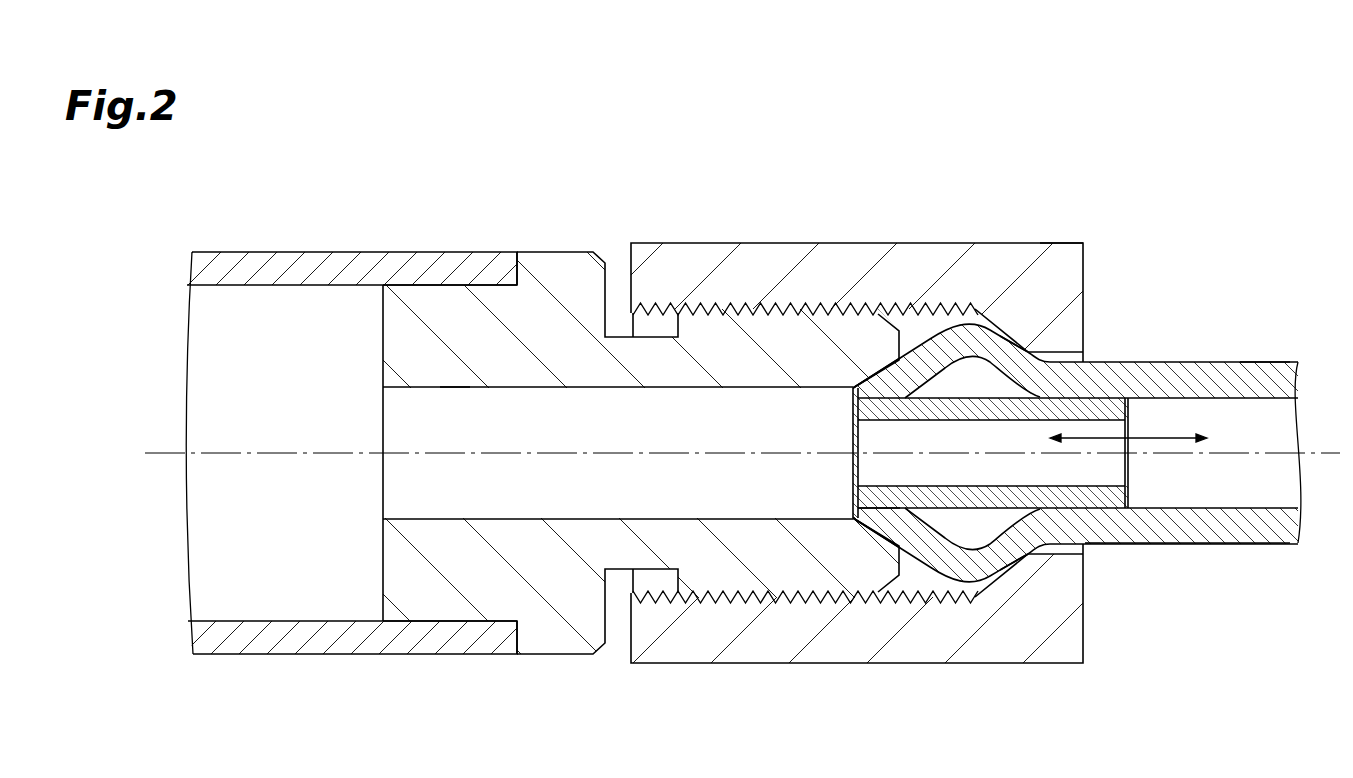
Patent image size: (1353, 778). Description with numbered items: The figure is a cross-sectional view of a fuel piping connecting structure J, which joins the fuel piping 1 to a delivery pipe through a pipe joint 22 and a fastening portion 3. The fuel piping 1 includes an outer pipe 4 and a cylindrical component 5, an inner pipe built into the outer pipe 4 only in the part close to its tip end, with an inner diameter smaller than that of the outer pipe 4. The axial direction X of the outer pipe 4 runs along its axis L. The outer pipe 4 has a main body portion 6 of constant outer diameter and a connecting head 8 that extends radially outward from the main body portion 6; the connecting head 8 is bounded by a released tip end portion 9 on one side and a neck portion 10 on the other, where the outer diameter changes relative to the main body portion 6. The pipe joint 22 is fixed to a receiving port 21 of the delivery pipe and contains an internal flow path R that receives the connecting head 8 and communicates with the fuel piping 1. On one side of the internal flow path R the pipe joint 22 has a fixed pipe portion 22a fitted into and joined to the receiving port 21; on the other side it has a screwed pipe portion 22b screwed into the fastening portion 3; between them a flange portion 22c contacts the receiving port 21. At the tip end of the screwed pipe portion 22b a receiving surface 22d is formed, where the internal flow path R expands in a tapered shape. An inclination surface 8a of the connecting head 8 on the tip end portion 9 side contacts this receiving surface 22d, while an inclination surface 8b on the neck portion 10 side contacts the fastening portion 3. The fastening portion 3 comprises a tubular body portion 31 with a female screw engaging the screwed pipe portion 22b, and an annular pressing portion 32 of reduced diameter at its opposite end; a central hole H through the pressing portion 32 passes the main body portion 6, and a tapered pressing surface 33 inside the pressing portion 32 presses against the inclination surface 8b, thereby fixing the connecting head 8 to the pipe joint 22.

The fuel piping 1 is at (1265, 361).
The receiving port 21 is at (359, 251).
The pipe joint 22 is at (534, 251).
The fixed pipe portion 22a is at (440, 608).
The screwed pipe portion 22b is at (712, 574).
The flange portion 22c is at (557, 640).
The receiving surface 22d is at (884, 545).
The fastening portion 3 is at (1043, 241).
The body portion 31 is at (687, 256).
The pressing portion 32 is at (1067, 328).
The pressing surface 33 is at (992, 578).
The outer pipe 4 is at (1228, 362).
The cylindrical component 5 is at (851, 410).
The main body portion 6 is at (1230, 544).
The connecting head 8 is at (952, 323).
The inclination surface 8a is at (913, 372).
The inclination surface 8b is at (1010, 334).
The tip end portion 9 is at (872, 514).
The neck portion 10 is at (1040, 540).
The central hole H is at (1094, 544).
The connecting structure J is at (1068, 243).
The axis L is at (1286, 449).
The internal flow path R is at (457, 389).
The axial direction X is at (1158, 437).